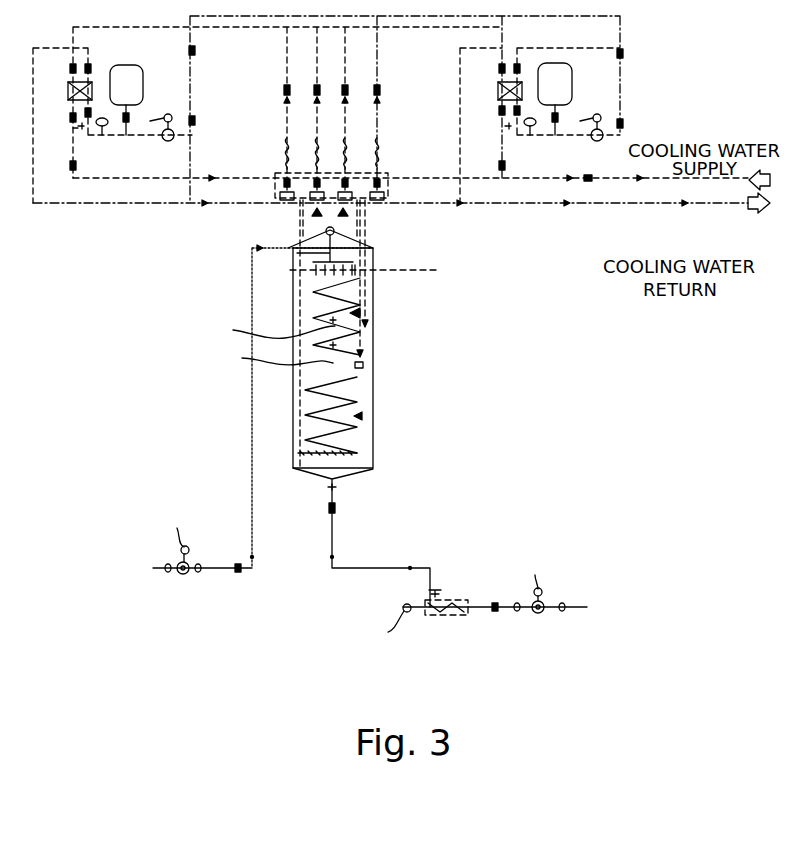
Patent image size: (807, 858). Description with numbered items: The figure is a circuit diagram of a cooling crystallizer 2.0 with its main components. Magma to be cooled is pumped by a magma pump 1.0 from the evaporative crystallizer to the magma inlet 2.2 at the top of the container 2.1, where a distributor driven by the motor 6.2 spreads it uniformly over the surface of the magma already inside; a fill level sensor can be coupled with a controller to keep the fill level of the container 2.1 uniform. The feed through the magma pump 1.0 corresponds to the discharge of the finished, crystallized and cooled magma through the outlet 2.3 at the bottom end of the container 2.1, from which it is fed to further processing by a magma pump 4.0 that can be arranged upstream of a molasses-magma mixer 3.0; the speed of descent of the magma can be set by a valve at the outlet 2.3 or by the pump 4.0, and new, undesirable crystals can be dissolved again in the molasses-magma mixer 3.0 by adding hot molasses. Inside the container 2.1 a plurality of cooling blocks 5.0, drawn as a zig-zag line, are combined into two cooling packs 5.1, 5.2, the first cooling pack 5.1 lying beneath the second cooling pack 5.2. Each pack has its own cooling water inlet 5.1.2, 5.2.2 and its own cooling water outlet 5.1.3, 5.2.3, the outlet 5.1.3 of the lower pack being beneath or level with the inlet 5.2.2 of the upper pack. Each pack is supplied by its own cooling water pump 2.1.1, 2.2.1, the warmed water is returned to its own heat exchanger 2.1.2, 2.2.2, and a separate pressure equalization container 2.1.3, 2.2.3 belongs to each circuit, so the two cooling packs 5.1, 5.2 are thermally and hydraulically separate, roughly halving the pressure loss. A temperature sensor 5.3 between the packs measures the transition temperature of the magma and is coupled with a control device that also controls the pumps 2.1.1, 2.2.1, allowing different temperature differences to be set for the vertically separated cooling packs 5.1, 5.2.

The magma pump 1.0 is at (203, 557).
The cooling crystallizer 2.0 is at (363, 366).
The container 2.1 is at (293, 297).
The cooling water pump 2.1.1 is at (163, 137).
The heat exchanger 2.1.2 is at (59, 91).
The pressure equalization container 2.1.3 is at (143, 100).
The magma inlet 2.2 is at (283, 246).
The cooling water pump 2.2.1 is at (592, 137).
The heat exchanger 2.2.2 is at (488, 91).
The pressure equalization container 2.2.3 is at (571, 99).
The outlet 2.3 is at (333, 493).
The molasses-magma mixer 3.0 is at (479, 620).
The magma pump 4.0 is at (545, 585).
The cooling blocks 5.0 is at (335, 335).
The first cooling pack 5.1 is at (362, 415).
The cooling water inlet 5.1.2 is at (292, 453).
The cooling water outlet 5.1.3 is at (297, 365).
The second cooling pack 5.2 is at (360, 312).
The cooling water inlet 5.2.2 is at (367, 352).
The cooling water outlet 5.2.3 is at (365, 278).
The temperature sensor 5.3 is at (374, 372).
The motor 6.2 is at (297, 246).